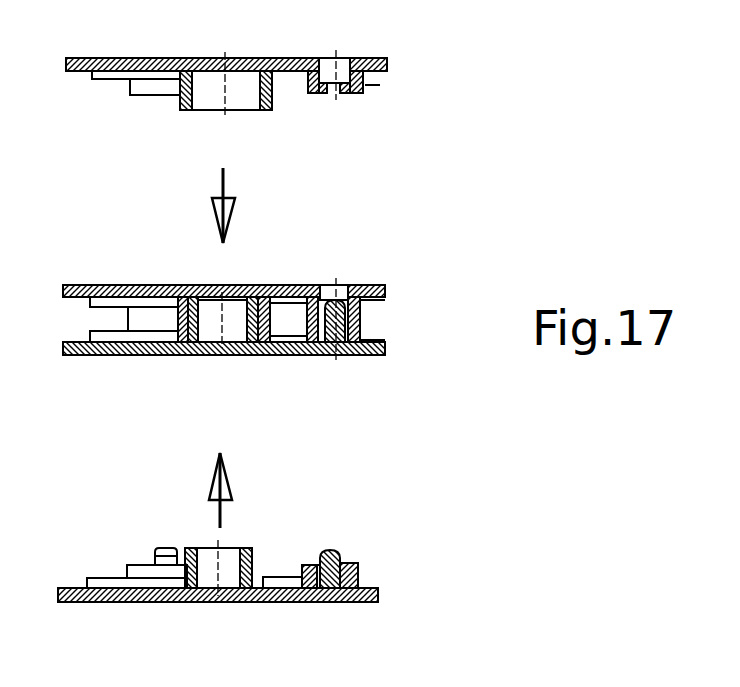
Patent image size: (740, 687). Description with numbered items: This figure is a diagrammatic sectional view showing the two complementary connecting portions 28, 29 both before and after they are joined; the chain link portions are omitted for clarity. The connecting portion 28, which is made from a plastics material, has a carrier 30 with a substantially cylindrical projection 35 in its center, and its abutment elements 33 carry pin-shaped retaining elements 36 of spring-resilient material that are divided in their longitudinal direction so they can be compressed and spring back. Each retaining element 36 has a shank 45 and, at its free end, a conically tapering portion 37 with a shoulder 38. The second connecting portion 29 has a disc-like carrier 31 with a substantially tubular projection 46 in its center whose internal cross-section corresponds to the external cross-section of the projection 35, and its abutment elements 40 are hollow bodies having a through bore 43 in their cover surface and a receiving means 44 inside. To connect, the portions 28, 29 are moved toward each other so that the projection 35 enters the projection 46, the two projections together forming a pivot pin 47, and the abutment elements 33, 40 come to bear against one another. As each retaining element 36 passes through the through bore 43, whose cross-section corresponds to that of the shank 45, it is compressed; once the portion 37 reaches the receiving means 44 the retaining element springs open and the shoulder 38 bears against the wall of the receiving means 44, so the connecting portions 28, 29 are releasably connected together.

The connecting portion 28 is at (415, 580).
The second connecting portion 29 is at (311, 85).
The carrier 30 is at (130, 58).
The carrier 31 is at (100, 600).
The abutment elements 33 is at (140, 330).
The cylindrical projection 35 is at (195, 335).
The pin-shaped retaining elements 36 is at (328, 600).
The conically tapering portion 37 is at (343, 533).
The shoulder 38 is at (322, 555).
The abutment elements 40 is at (365, 85).
The through bore 43 is at (340, 93).
The receiving means 44 is at (343, 64).
The shank 45 is at (357, 565).
The tubular projection 46 is at (272, 102).
The pivot pin 47 is at (283, 285).